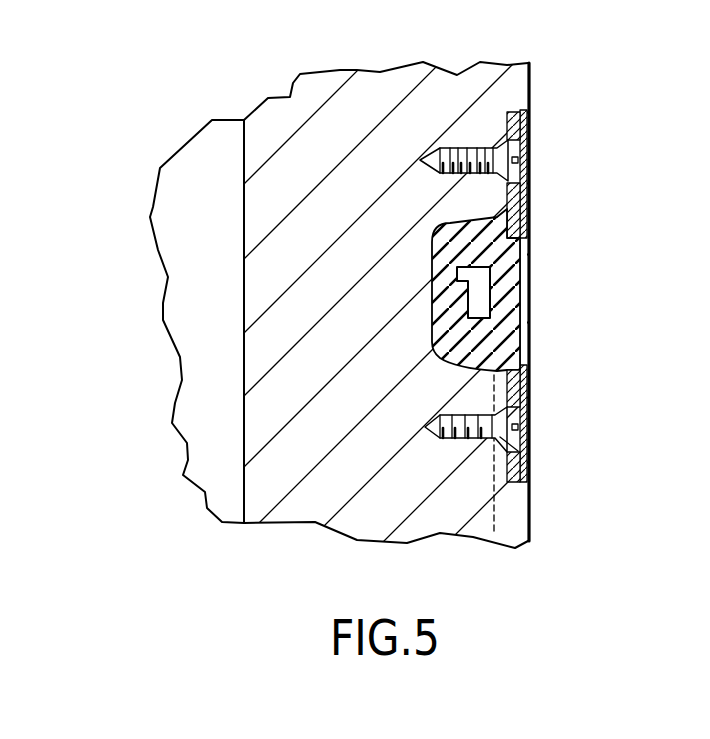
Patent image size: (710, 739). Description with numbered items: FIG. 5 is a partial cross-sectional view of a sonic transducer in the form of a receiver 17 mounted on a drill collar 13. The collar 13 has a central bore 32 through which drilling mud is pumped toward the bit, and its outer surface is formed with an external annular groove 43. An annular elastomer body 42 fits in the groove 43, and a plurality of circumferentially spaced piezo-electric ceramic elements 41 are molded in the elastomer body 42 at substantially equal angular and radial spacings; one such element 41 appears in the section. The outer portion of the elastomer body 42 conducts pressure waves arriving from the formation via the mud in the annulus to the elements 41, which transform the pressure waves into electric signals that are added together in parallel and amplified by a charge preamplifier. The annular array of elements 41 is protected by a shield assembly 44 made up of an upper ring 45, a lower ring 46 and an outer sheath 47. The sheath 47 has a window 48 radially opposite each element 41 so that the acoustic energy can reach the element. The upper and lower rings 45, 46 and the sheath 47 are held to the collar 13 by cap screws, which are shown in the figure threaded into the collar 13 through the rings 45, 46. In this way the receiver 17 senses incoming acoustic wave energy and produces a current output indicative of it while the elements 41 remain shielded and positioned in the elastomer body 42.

The drill collar 13 is at (531, 83).
The receiver 17 is at (578, 240).
The central bore 32 is at (190, 396).
The piezo-electric ceramic element 41 is at (478, 298).
The annular elastomer body 42 is at (508, 324).
The external annular groove 43 is at (446, 262).
The shield assembly 44 is at (550, 188).
The upper ring 45 is at (529, 118).
The lower ring 46 is at (525, 460).
The outer sheath 47 is at (525, 397).
The window 48 is at (530, 284).